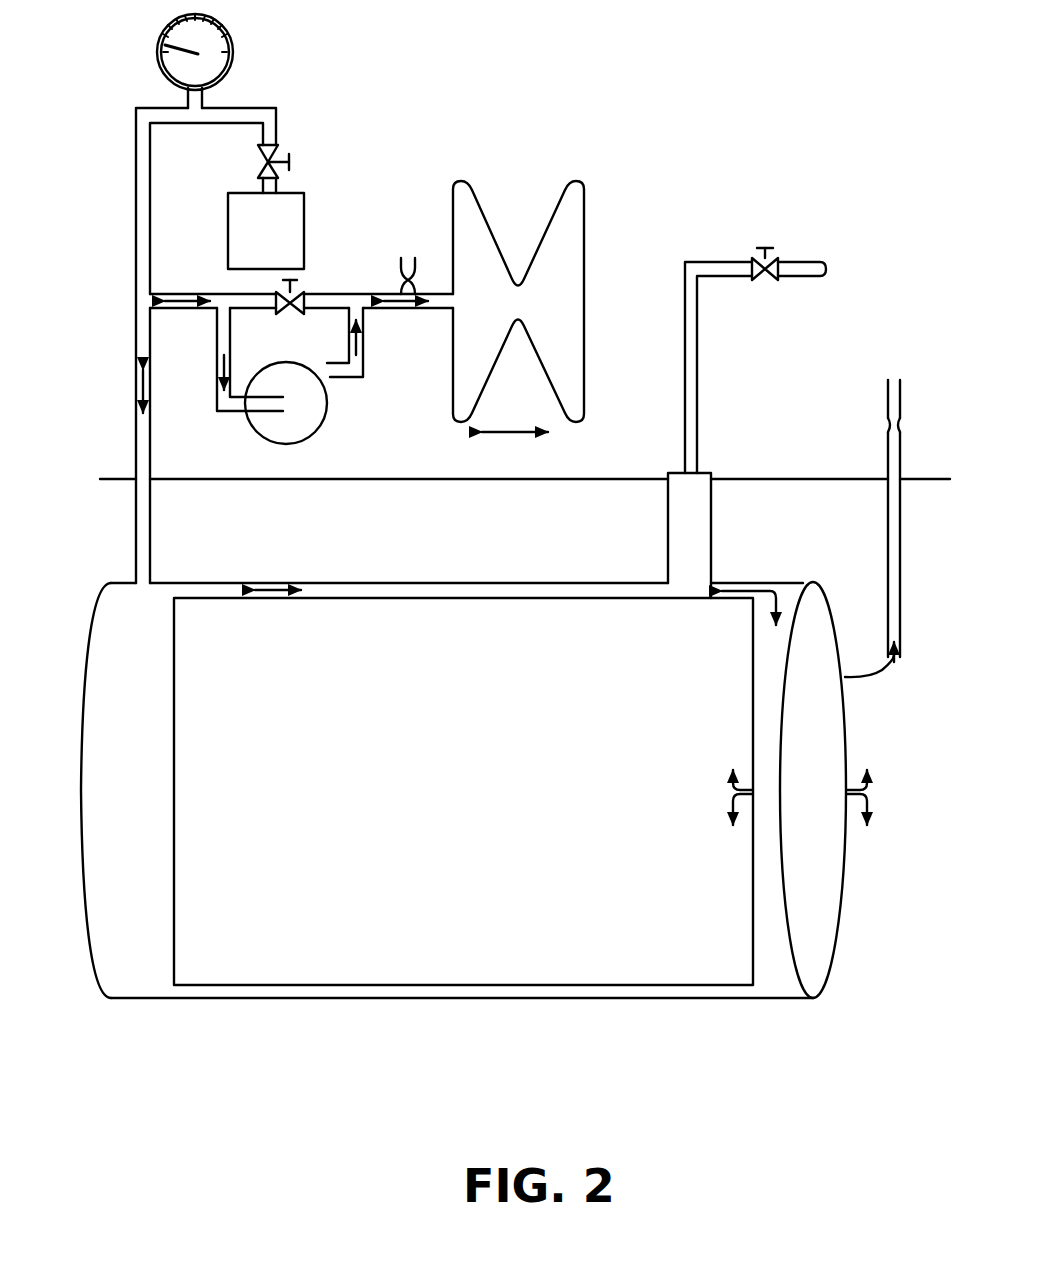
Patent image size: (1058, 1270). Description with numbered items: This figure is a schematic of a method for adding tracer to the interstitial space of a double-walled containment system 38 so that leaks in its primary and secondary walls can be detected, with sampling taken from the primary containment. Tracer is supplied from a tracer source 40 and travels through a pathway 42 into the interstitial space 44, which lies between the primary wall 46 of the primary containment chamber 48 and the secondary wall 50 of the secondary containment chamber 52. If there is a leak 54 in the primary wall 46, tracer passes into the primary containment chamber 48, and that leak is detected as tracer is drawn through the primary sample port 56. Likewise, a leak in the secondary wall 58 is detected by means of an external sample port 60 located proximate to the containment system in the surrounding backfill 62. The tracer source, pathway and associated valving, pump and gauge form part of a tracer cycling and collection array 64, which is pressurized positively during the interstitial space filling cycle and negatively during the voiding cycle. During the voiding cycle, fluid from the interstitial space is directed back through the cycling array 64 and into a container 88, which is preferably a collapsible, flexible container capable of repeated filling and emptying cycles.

The double-walled containment system 38 is at (850, 999).
The tracer source 40 is at (305, 222).
The pathway 42 is at (136, 215).
The interstitial space 44 is at (785, 592).
The primary wall 46 is at (460, 599).
The primary containment chamber 48 is at (440, 789).
The secondary wall 50 is at (427, 583).
The secondary containment chamber 52 is at (104, 723).
The leak 54 is at (753, 790).
The primary sample port 56 is at (772, 280).
The secondary wall leak 58 is at (846, 791).
The external sample port 60 is at (888, 425).
The backfill 62 is at (912, 547).
The tracer cycling and collection array 64 is at (392, 114).
The container 88 is at (572, 298).